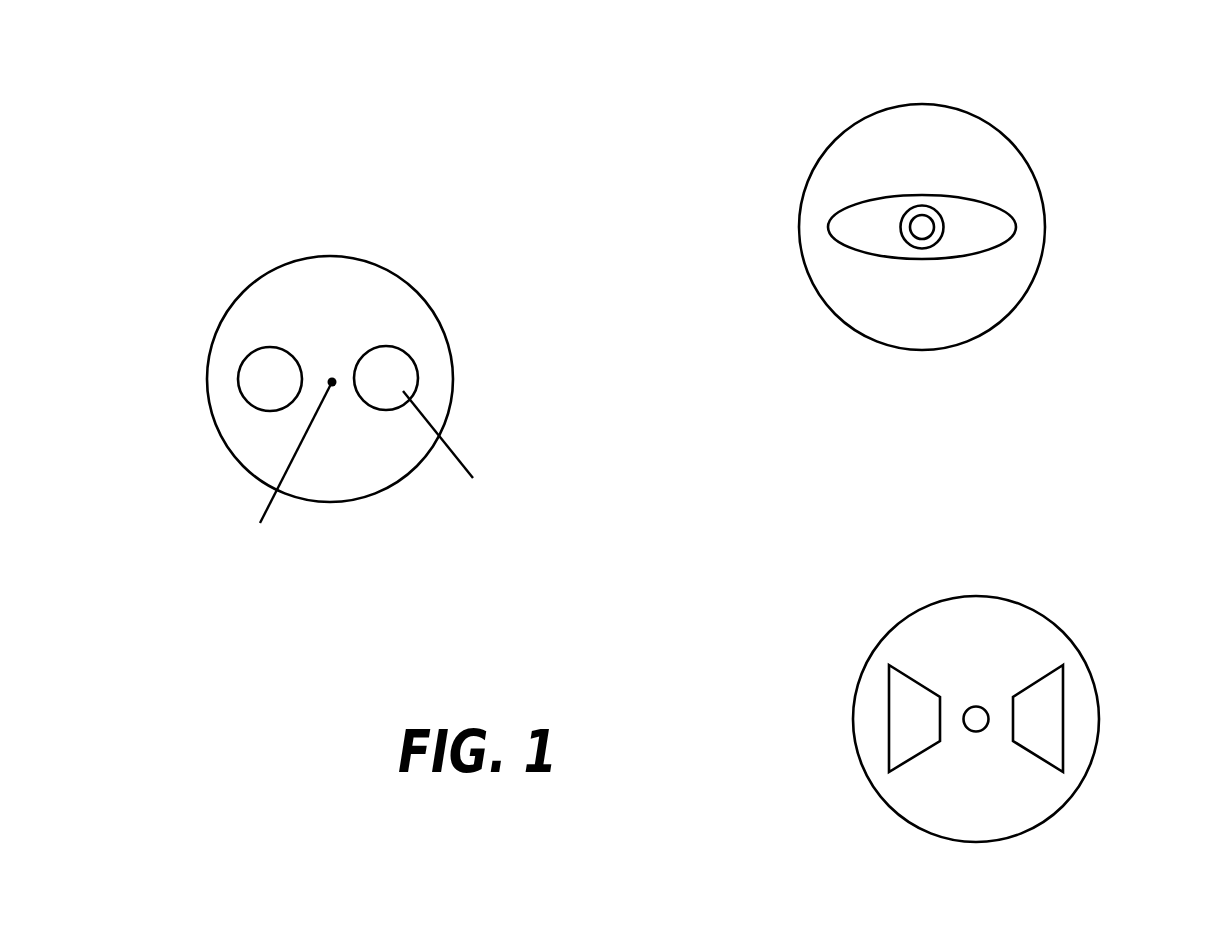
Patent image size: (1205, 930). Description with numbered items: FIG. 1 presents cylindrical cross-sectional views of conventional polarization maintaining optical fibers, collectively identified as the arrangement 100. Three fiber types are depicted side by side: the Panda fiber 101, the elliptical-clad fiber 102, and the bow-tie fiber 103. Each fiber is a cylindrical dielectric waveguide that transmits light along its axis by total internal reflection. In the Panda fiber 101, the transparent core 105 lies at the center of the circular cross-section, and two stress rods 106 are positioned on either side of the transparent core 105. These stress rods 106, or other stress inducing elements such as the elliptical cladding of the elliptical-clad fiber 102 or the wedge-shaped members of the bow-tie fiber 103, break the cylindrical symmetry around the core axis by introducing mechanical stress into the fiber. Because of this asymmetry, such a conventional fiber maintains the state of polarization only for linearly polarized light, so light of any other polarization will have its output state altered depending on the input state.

The polarization-maintaining fiber types 100 is at (348, 120).
The Panda fiber 101 is at (455, 285).
The elliptical-clad fiber 102 is at (1035, 145).
The bow-tie fiber 103 is at (1073, 623).
The transparent core 105 is at (330, 381).
The stress rods 106 is at (393, 383).